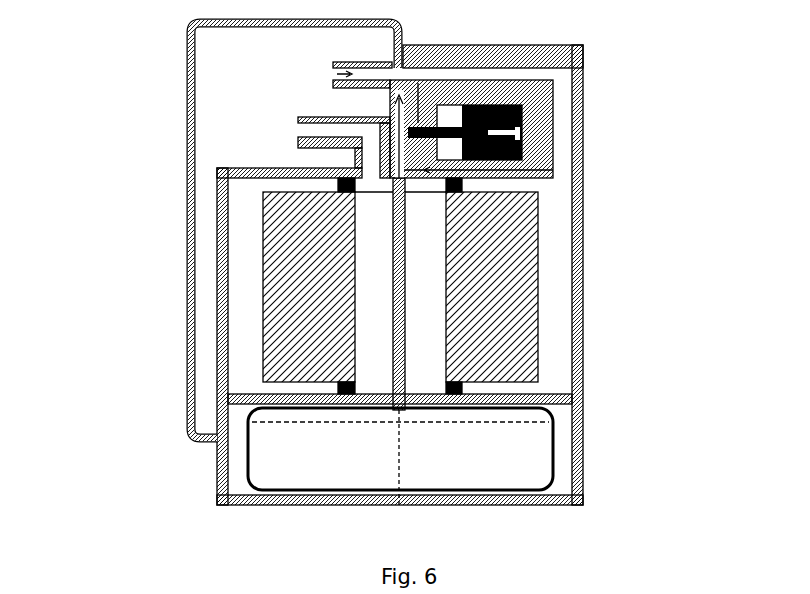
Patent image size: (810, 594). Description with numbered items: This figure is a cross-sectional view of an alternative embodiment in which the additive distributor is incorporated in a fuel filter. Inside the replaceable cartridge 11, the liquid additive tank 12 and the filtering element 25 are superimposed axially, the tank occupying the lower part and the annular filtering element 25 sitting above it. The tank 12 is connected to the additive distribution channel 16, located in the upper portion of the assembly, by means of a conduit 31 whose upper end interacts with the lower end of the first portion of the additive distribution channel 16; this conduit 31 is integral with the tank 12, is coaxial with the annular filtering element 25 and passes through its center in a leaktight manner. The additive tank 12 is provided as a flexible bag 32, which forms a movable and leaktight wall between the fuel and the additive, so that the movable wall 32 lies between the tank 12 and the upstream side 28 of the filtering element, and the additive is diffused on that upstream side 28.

The replaceable cartridge 11 is at (583, 225).
The liquid additive tank 12 is at (513, 470).
The additive distribution channel 16 is at (405, 155).
The filtering element 25 is at (513, 323).
The upstream side of the filtering element 28 is at (558, 268).
The conduit 31 is at (396, 229).
The flexible bag 32 is at (257, 458).